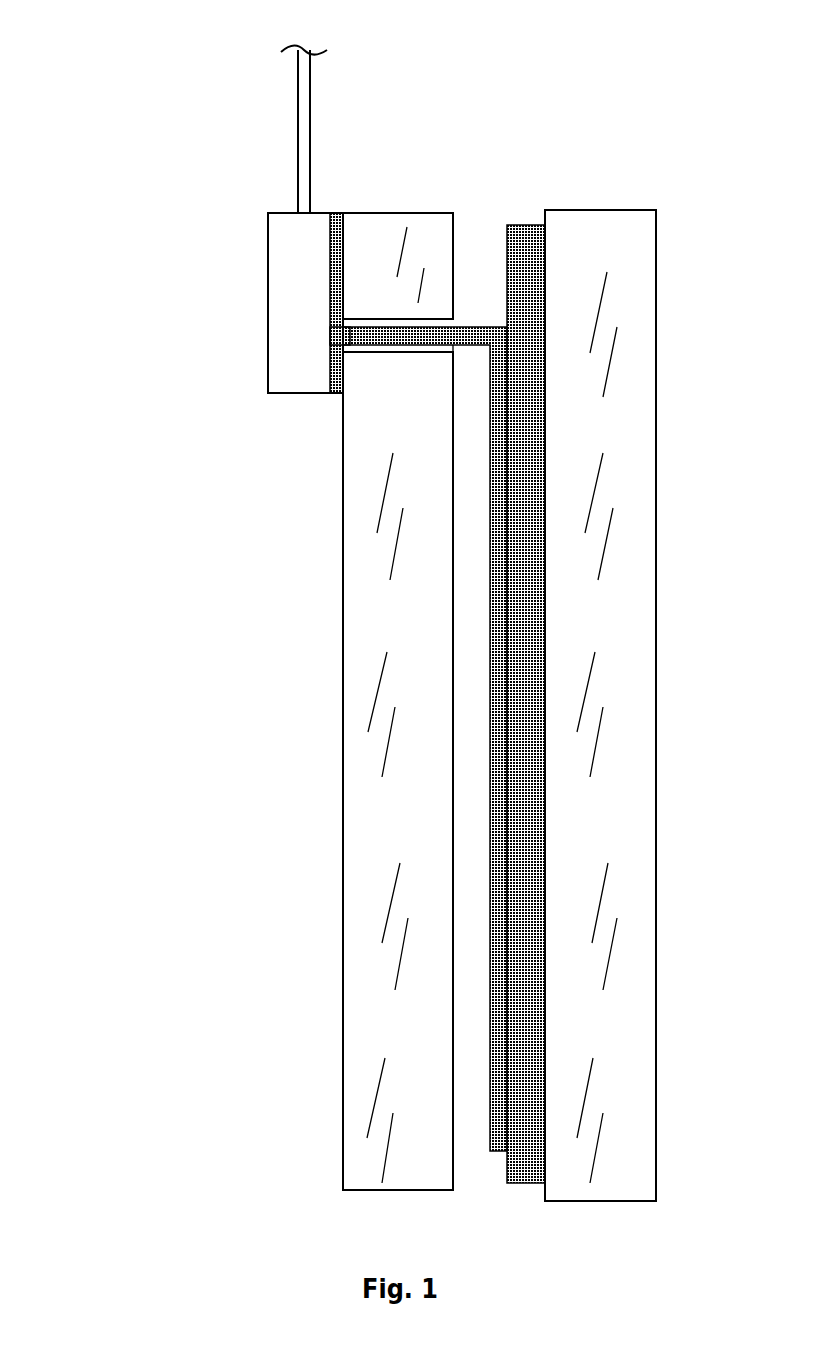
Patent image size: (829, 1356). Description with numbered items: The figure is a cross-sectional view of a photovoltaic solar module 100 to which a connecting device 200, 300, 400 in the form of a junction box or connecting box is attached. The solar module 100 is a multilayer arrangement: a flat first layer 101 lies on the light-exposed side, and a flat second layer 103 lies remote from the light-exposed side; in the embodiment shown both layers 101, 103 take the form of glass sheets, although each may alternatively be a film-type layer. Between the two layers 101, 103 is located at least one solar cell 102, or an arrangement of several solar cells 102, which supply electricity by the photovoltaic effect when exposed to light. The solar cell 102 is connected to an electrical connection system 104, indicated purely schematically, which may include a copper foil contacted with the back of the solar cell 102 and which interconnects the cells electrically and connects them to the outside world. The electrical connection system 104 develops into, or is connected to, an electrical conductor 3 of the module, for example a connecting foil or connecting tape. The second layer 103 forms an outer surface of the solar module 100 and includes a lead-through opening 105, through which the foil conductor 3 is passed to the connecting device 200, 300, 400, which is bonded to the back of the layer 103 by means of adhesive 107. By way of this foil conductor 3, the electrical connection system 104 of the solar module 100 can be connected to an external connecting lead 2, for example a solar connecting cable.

The solar module 100 is at (134, 42).
The external connecting lead 2 is at (298, 135).
The electrical conductor 3 is at (330, 333).
The first layer 101 is at (640, 527).
The solar cell 102 is at (538, 460).
The second layer 103 is at (393, 213).
The electrical connection system 104 is at (500, 1135).
The lead-through opening 105 is at (405, 362).
The adhesive 107 is at (337, 213).
The connecting device 200 is at (215, 303).
The connecting device 300 is at (215, 303).
The connecting device 400 is at (272, 304).